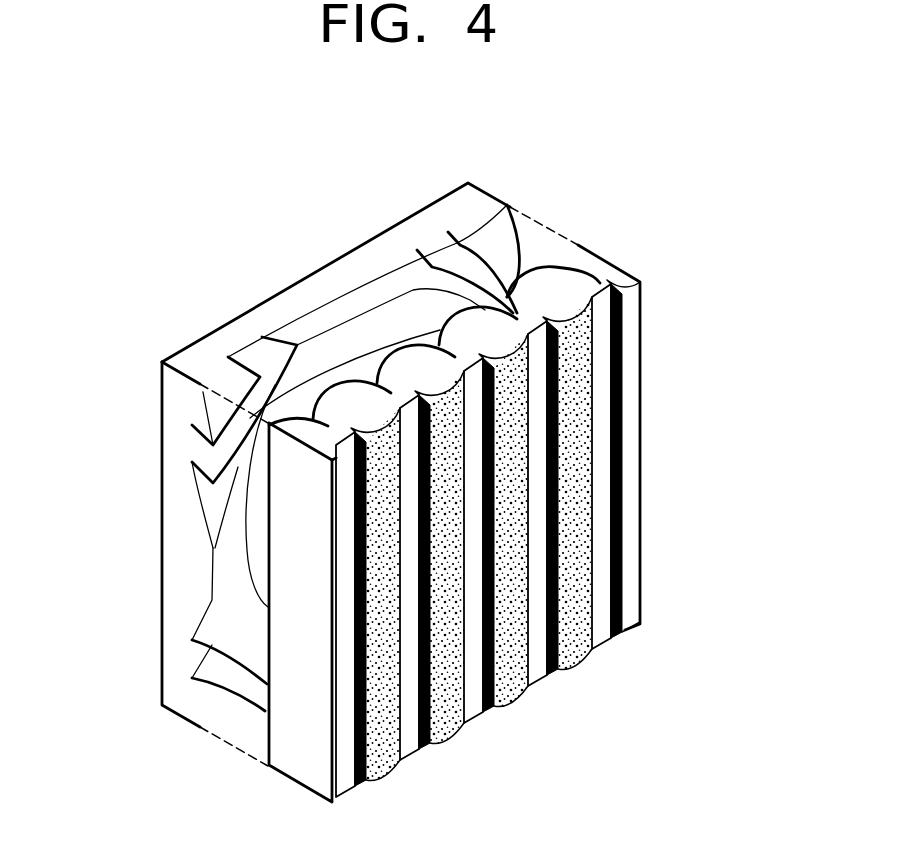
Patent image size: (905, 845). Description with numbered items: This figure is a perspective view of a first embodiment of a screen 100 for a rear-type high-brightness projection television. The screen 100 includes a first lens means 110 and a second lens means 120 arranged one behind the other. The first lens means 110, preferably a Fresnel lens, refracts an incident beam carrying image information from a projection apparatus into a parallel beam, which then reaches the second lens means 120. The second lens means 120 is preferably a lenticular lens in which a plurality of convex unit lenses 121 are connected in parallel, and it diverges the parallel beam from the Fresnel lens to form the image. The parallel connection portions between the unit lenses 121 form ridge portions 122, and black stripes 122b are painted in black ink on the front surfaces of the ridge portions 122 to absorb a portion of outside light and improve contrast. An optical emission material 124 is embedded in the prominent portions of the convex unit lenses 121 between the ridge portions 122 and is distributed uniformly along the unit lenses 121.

The screen 100 is at (292, 254).
The first lens means 110 is at (483, 207).
The second lens means 120 is at (610, 273).
The convex unit lenses 121 is at (515, 347).
The ridge portions 122 is at (612, 267).
The black stripes 122b is at (567, 487).
The optical emission material 124 is at (455, 338).